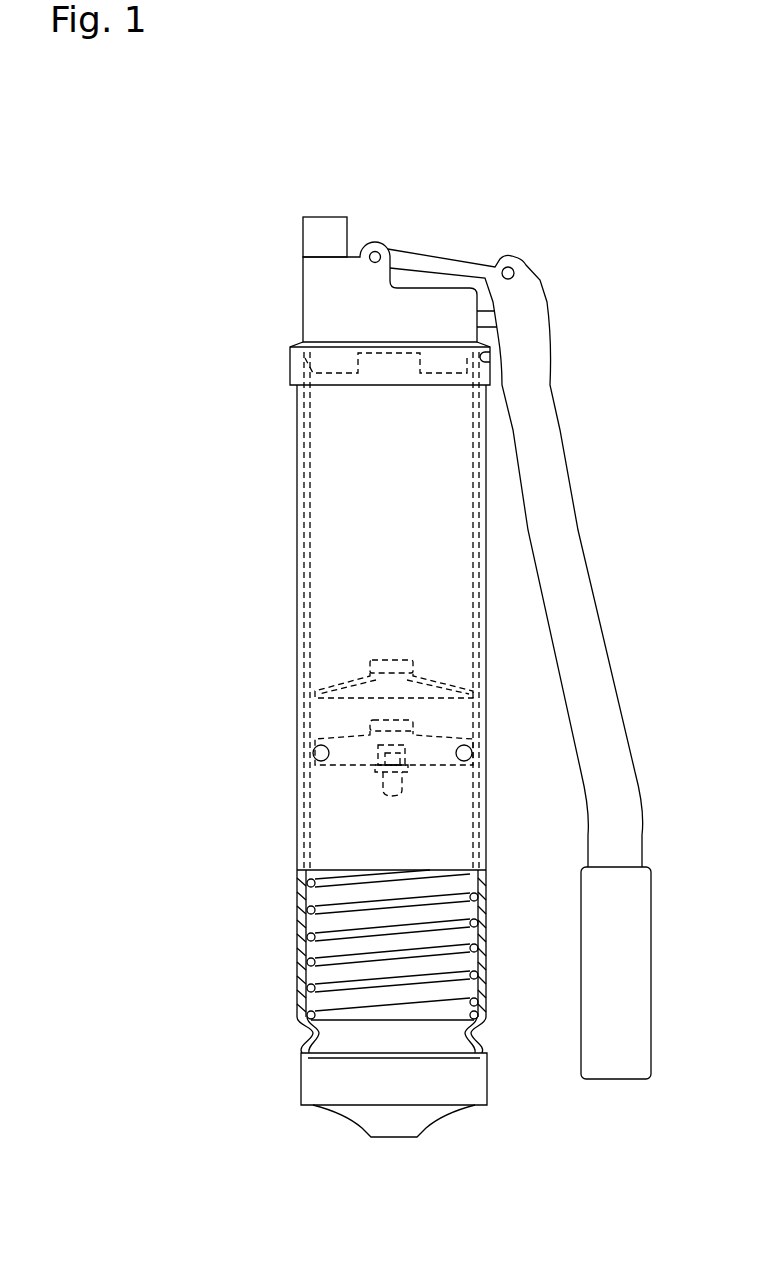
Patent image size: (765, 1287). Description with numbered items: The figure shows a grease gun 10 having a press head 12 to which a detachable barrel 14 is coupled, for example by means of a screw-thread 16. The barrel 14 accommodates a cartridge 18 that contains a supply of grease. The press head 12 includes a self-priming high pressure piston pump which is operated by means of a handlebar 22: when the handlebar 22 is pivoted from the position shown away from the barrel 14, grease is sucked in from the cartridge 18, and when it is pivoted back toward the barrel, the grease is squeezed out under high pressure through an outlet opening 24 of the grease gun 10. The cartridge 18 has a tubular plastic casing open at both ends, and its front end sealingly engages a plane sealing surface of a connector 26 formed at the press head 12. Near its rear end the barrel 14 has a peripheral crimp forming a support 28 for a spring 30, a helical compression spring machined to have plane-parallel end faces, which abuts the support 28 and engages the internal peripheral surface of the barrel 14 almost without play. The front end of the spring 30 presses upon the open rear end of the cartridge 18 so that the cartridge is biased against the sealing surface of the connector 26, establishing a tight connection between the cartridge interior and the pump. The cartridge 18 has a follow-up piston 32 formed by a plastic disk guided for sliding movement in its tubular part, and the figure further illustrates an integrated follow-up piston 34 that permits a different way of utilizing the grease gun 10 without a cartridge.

The grease gun 10 is at (162, 518).
The press head 12 is at (318, 284).
The barrel 14 is at (297, 660).
The screw-thread 16 is at (292, 362).
The cartridge 18 is at (305, 462).
The handlebar 22 is at (567, 514).
The outlet opening 24 is at (328, 230).
The connector 26 is at (492, 361).
The support 28 is at (305, 1035).
The spring 30 is at (300, 935).
The follow-up piston 32 is at (395, 660).
The integrated follow-up piston 34 is at (367, 773).